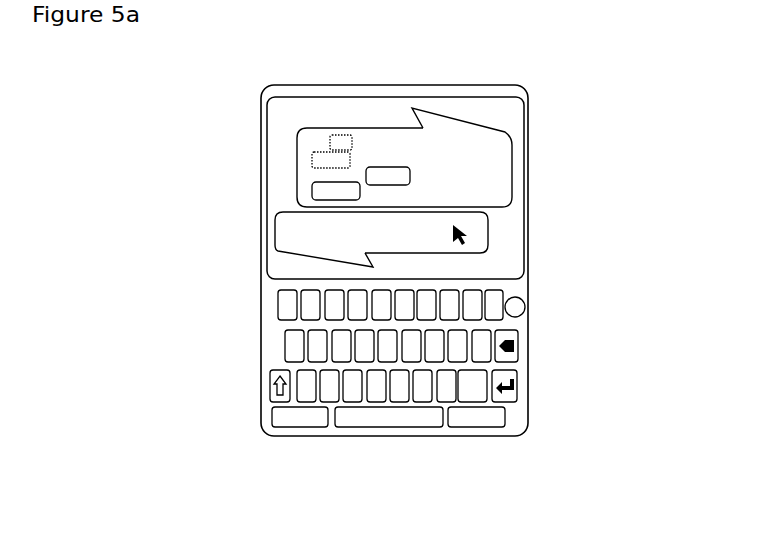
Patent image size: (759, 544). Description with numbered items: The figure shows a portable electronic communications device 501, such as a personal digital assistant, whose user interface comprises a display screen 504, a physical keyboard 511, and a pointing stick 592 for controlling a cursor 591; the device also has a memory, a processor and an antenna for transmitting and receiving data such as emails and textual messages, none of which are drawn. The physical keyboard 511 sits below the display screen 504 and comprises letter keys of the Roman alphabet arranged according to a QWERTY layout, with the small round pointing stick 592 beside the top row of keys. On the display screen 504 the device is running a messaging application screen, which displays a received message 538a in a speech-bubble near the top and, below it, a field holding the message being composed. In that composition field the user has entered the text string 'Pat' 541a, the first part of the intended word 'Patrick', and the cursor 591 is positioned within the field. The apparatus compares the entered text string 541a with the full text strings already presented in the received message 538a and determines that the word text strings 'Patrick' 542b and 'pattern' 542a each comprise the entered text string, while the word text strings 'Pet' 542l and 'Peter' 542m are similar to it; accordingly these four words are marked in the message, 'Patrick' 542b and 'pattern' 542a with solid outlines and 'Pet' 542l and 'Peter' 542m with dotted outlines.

The portable electronic communications device 501 is at (200, 451).
The display screen 504 is at (290, 267).
The physical keyboard 511 is at (460, 352).
The received message bubble 538a is at (498, 152).
The entered text string 541a is at (317, 228).
The word text string 'pattern' 542a is at (410, 180).
The word text string 'Patrick' 542b is at (312, 190).
The word text string 'Pet' 542l is at (338, 128).
The word text string 'Peter' 542m is at (312, 157).
The cursor 591 is at (467, 234).
The pointing stick 592 is at (525, 305).